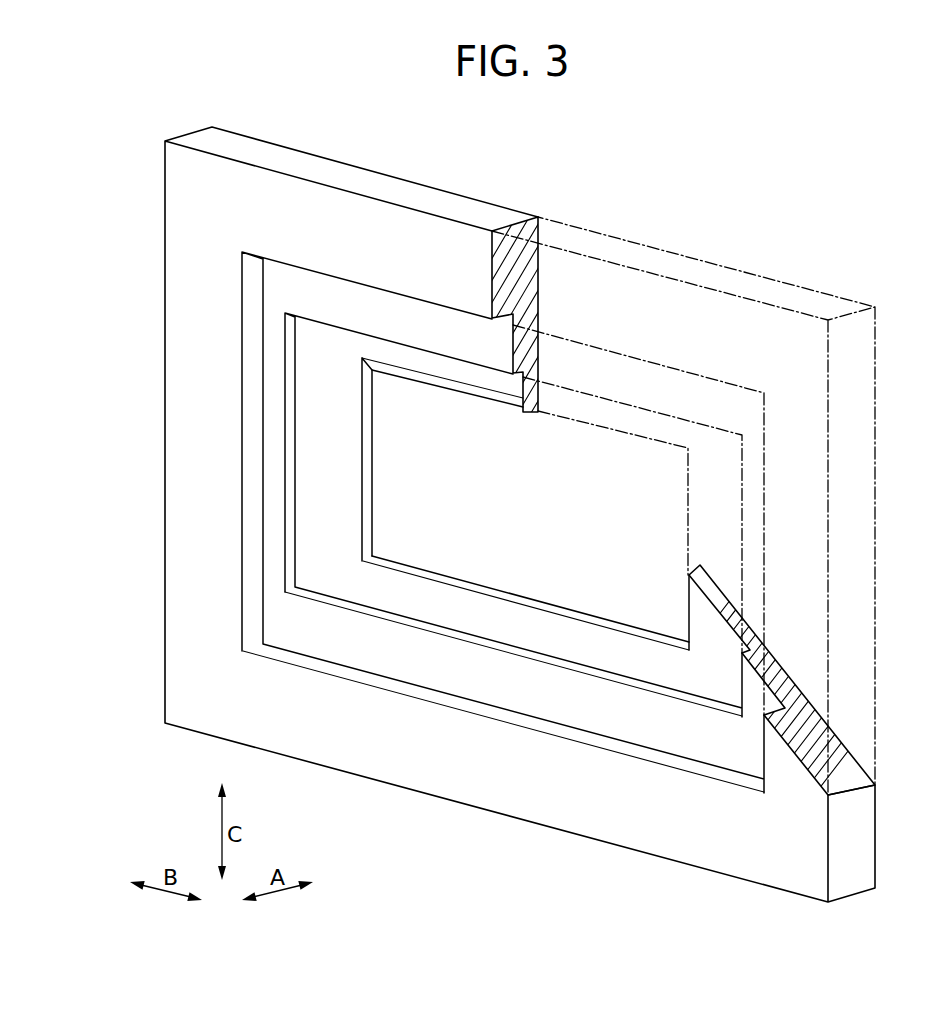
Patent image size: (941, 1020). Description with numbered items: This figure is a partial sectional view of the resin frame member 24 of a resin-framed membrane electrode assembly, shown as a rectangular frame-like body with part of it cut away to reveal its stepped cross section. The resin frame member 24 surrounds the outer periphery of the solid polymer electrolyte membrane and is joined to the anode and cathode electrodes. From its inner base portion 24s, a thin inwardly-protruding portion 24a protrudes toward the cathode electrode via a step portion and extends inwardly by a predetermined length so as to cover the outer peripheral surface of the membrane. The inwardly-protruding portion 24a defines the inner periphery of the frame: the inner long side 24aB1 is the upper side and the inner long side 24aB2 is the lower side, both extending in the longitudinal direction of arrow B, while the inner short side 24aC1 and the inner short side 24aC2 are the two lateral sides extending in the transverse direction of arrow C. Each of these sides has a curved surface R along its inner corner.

The resin frame member 24 is at (809, 223).
The inwardly-protruding portion 24a is at (513, 620).
The inner base portion 24s is at (253, 482).
The inner long side 24aB1 is at (498, 395).
The inner long side 24aB2 is at (468, 592).
The inner short side 24aC1 is at (688, 610).
The inner short side 24aC2 is at (369, 458).
The curved surface R is at (420, 377).